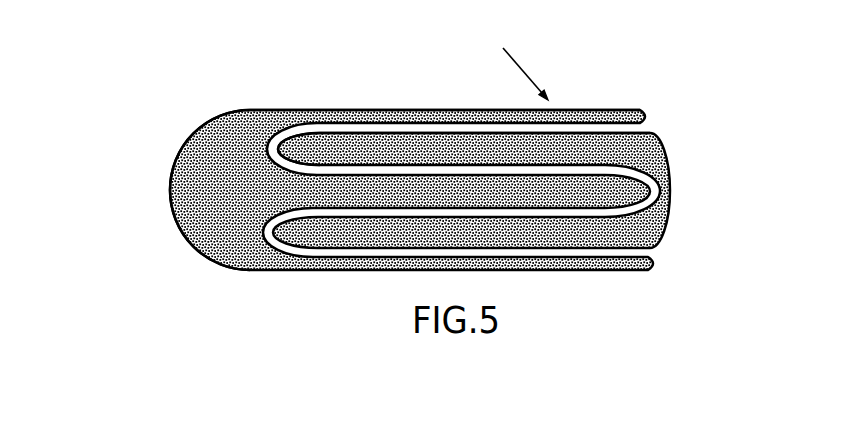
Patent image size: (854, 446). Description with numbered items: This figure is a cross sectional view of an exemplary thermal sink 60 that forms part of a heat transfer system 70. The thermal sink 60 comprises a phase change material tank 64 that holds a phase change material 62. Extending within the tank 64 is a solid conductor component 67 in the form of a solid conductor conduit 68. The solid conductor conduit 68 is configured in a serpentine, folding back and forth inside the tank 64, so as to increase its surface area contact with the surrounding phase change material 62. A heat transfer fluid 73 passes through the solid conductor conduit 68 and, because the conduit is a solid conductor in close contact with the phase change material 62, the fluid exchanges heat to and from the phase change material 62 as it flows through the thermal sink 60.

The thermal sink 60 is at (180, 230).
The phase change material 62 is at (190, 181).
The phase change material tank 64 is at (210, 117).
The solid conductor component 67 is at (415, 128).
The solid conductor conduit 68 is at (328, 135).
The heat transfer system 70 is at (512, 58).
The heat transfer fluid 73 is at (467, 112).